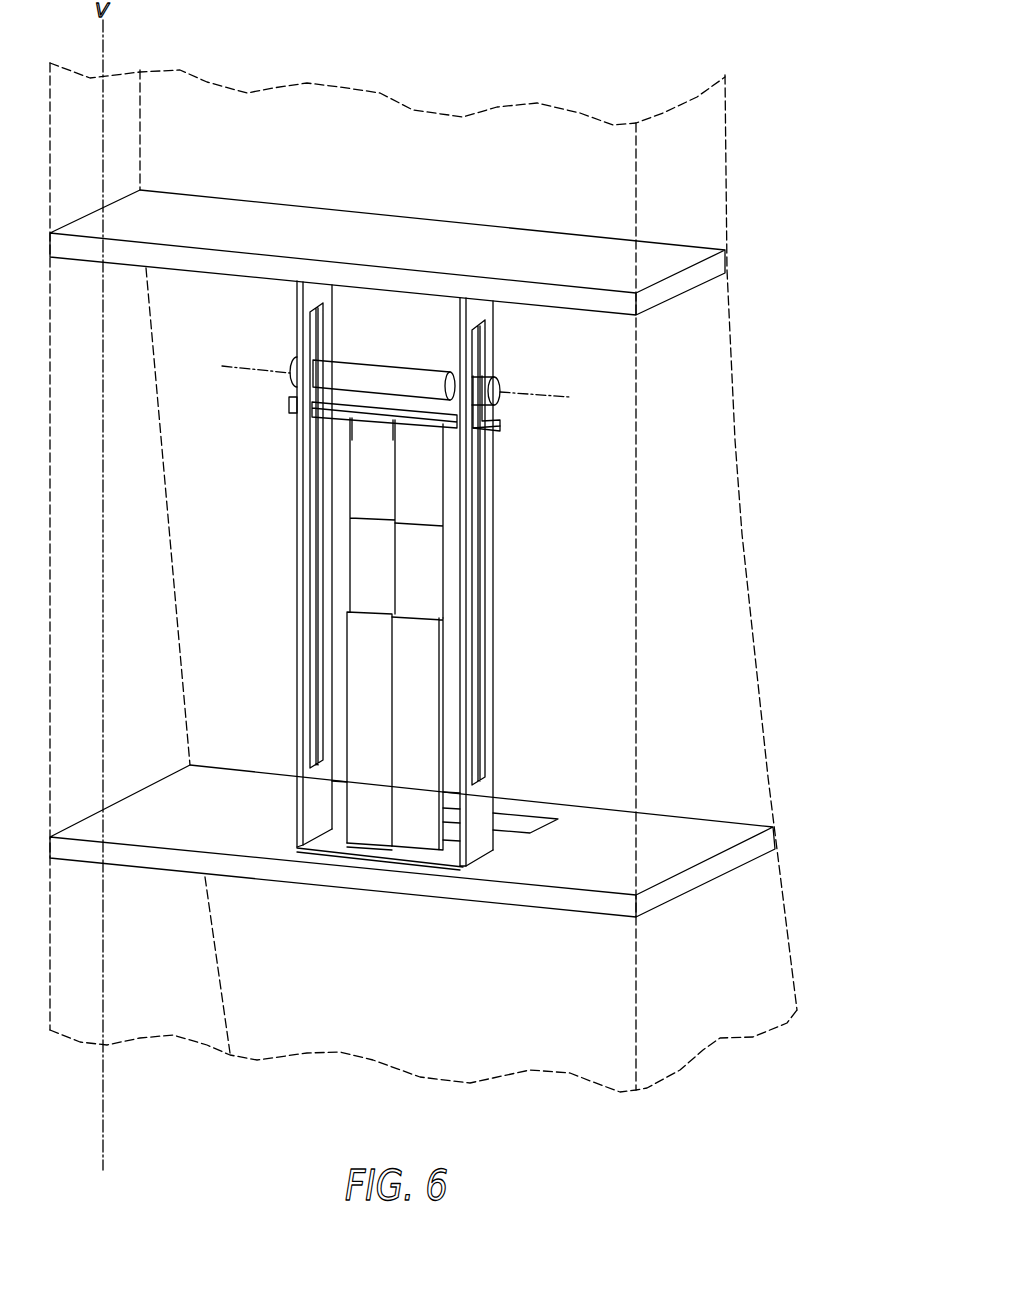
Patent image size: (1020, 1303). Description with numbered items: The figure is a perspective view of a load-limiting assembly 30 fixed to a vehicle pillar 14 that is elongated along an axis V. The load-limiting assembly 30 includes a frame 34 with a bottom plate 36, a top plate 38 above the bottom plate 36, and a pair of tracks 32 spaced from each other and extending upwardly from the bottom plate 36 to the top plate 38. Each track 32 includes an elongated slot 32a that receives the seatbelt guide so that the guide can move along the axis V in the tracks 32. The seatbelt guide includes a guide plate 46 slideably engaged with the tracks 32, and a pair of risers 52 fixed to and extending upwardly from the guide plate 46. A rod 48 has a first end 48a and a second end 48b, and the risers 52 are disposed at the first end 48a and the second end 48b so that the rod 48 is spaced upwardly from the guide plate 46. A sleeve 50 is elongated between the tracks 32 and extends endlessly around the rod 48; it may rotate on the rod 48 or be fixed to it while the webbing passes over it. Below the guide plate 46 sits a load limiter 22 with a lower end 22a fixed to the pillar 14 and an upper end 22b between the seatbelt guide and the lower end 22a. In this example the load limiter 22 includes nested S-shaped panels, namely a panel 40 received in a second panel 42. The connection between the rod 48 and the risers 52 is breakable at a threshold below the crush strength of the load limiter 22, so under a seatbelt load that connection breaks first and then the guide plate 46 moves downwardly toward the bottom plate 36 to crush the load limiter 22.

The pillar 14 is at (725, 142).
The load-limiting assembly 30 is at (700, 452).
The frame 34 is at (266, 150).
The bottom plate 36 is at (500, 906).
The top plate 38 is at (455, 213).
The track 32 is at (297, 643).
The elongated slot 32a is at (318, 613).
The sleeve 50 is at (403, 365).
The rod 48 is at (353, 372).
The first end 48a is at (509, 379).
The second end 48b is at (281, 356).
The riser 52 is at (290, 398).
The guide plate 46 is at (498, 429).
The panel 40 is at (365, 500).
The second panel 42 is at (423, 595).
The load limiter 22 is at (379, 748).
The lower end 22a is at (371, 830).
The upper end 22b is at (369, 434).